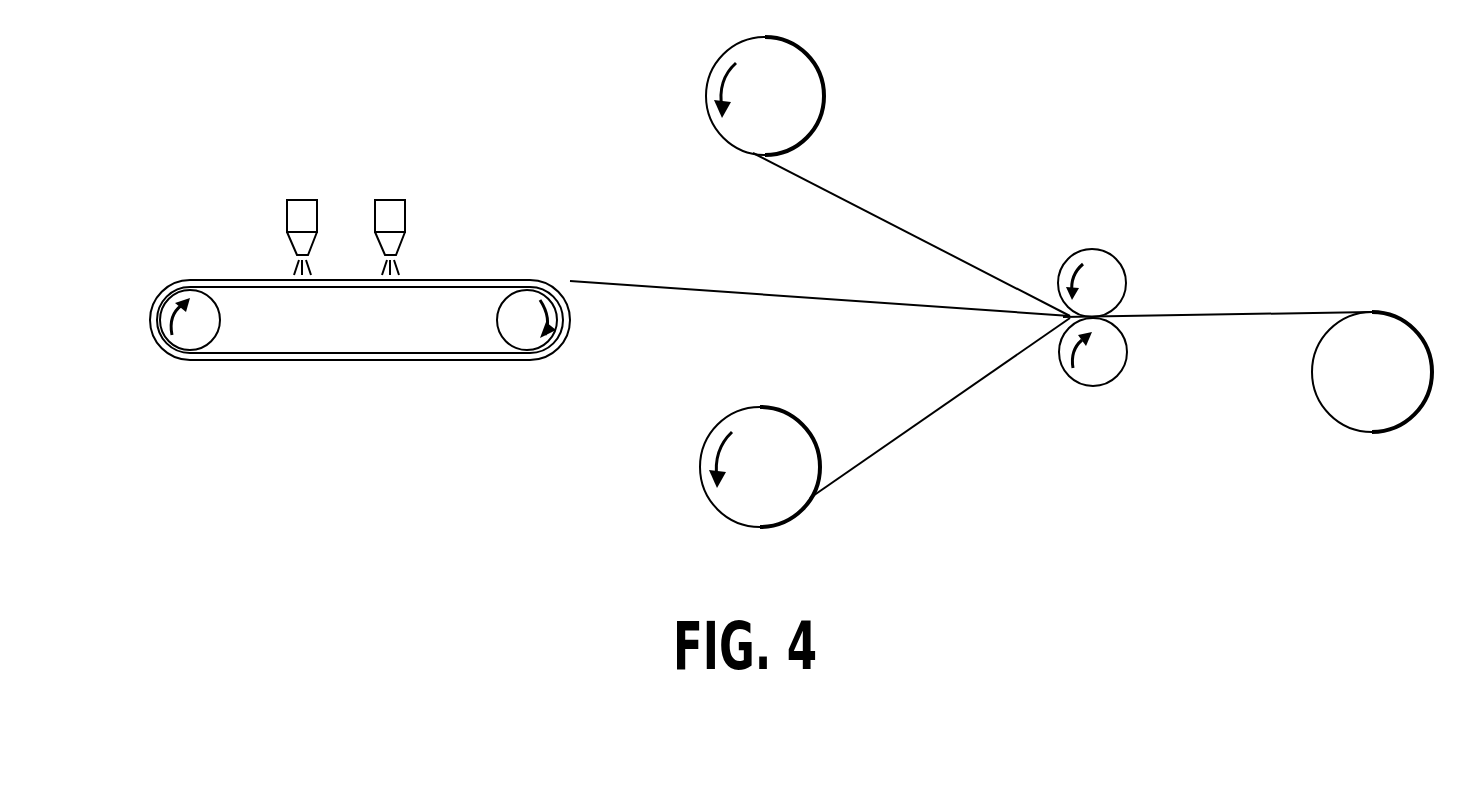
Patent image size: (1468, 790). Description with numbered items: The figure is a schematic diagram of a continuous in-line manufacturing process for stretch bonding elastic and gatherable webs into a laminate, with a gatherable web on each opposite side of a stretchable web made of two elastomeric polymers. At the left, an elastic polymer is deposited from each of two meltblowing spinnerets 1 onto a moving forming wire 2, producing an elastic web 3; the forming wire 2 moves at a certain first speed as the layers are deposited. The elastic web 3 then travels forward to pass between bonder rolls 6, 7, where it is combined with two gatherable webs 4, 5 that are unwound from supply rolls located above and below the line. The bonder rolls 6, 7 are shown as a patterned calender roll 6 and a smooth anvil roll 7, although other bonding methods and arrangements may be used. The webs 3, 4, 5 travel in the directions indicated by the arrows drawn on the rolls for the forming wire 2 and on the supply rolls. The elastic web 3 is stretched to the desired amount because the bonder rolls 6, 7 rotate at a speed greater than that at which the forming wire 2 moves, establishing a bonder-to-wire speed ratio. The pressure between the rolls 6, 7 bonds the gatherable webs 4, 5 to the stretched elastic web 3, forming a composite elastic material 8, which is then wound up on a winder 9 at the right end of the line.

The meltblowing spinnerets 1 is at (312, 200).
The forming wire 2 is at (325, 361).
The elastic web 3 is at (598, 283).
The gatherable web 4 is at (797, 44).
The gatherable web 5 is at (728, 521).
The patterned calender roll 6 is at (1108, 252).
The smooth anvil roll 7 is at (1095, 387).
The composite elastic material 8 is at (1267, 315).
The winder 9 is at (1418, 337).